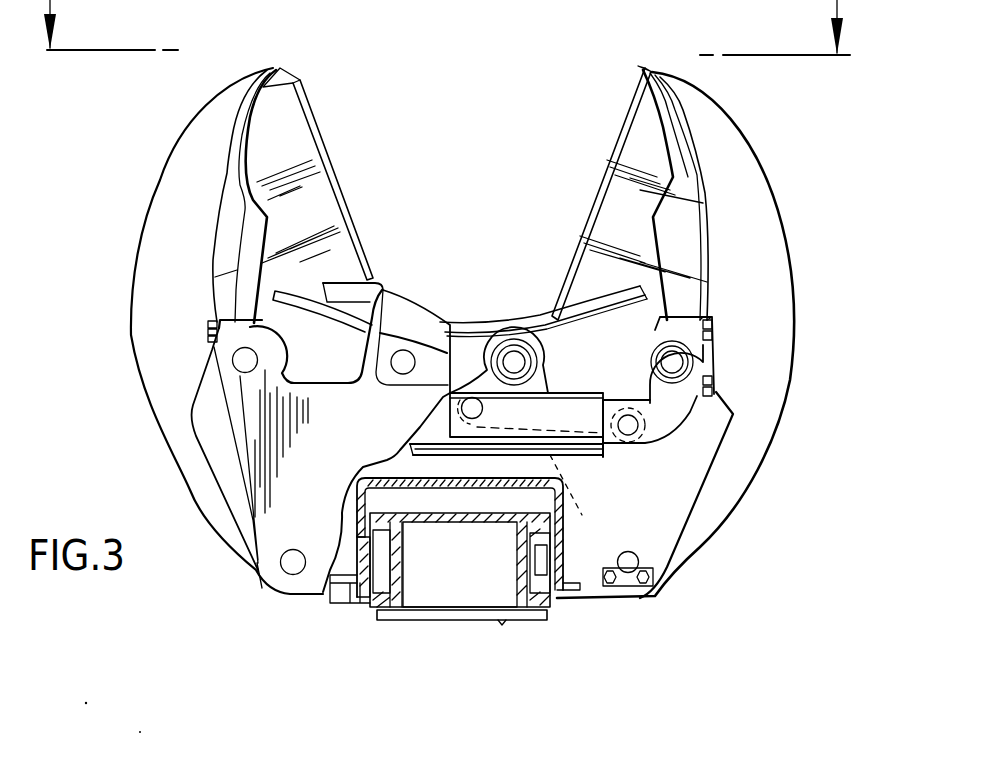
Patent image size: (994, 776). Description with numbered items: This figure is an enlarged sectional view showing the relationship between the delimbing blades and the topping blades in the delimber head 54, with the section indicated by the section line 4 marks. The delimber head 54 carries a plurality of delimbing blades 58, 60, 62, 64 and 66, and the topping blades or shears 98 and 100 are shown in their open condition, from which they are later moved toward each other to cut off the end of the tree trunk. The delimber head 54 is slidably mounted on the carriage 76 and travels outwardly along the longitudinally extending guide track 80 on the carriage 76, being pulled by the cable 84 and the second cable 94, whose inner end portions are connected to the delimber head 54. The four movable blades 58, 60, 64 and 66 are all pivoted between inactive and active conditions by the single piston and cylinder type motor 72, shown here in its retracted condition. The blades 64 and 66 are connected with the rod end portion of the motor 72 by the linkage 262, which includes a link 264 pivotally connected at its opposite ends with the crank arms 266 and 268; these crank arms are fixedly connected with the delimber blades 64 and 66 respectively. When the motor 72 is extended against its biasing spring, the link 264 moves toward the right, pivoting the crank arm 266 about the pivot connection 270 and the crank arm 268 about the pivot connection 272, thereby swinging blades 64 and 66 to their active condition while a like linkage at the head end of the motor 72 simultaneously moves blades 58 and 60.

The section line 4- 4 is at (447, 42).
The delimber head 54 is at (817, 195).
The delimbing blade 58 is at (233, 144).
The delimbing blade 66 is at (670, 247).
The topping blade 98 is at (290, 130).
The topping blade 100 is at (630, 133).
The delimbing blade 60 is at (340, 325).
The delimbing blade 62 is at (420, 317).
The delimbing blade 64 is at (578, 333).
The crank arm 266 is at (485, 360).
The pivot connection 270 is at (517, 364).
The linkage 262 is at (581, 391).
The link 264 is at (510, 493).
The piston and cylinder type motor 72 is at (574, 451).
The pivot connection 272 is at (673, 362).
The crank arm 268 is at (662, 432).
The guide track 80 is at (393, 553).
The carriage 76 is at (387, 603).
The cable 84 is at (288, 570).
The second cable 94 is at (627, 573).